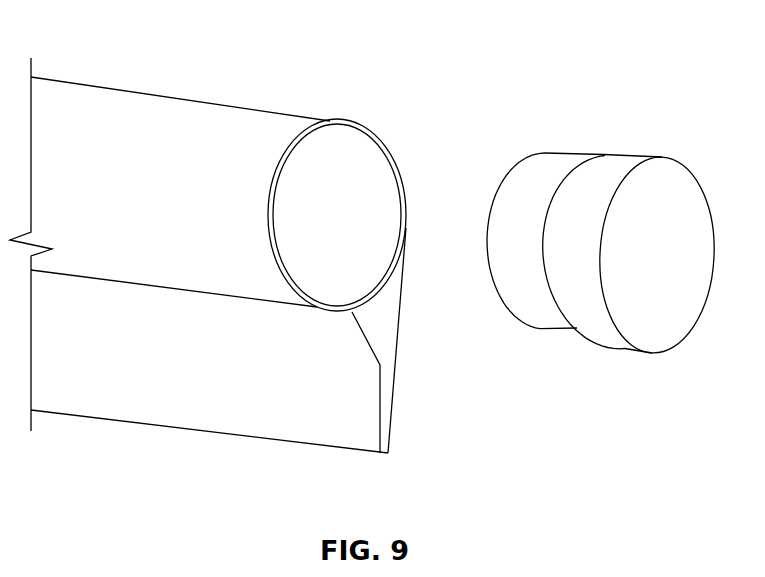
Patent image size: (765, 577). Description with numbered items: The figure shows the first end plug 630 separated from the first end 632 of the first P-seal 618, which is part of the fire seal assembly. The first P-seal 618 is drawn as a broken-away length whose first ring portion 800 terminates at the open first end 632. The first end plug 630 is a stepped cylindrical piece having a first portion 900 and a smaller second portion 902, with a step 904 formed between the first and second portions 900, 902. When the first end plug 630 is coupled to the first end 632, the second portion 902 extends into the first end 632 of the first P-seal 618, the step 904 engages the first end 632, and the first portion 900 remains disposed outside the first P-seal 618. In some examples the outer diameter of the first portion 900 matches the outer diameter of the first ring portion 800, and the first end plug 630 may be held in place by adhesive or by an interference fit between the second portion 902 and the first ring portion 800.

The first P-seal 618 is at (97, 103).
The first ring portion 800 is at (257, 122).
The first end 632 is at (362, 130).
The second portion 902 is at (538, 180).
The step 904 is at (585, 172).
The first portion 900 is at (618, 178).
The first end plug 630 is at (675, 233).